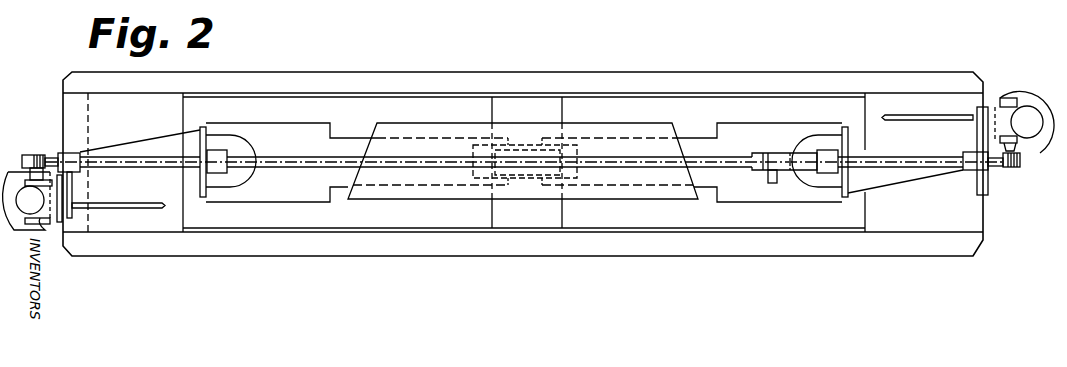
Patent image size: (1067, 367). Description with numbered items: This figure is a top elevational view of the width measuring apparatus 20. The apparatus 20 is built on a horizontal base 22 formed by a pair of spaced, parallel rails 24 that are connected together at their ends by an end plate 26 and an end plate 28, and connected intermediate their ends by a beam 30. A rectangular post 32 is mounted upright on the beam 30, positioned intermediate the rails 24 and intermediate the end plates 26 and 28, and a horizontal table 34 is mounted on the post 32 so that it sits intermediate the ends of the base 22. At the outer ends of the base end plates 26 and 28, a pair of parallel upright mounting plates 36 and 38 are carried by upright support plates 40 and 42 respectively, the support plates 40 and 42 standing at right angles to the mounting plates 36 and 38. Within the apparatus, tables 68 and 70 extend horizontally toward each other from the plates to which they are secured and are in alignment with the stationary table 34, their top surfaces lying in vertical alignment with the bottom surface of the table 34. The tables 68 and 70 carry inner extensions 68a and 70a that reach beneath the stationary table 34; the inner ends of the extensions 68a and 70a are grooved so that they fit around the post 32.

The width measuring apparatus 20 is at (497, 52).
The horizontal base 22 is at (572, 247).
The rails 24 is at (427, 79).
The end plate 26 is at (173, 222).
The end plate 28 is at (920, 227).
The beam 30 is at (543, 107).
The rectangular post 32 is at (532, 163).
The horizontal table 34 is at (625, 130).
The mounting plate 36 is at (72, 180).
The mounting plate 38 is at (980, 107).
The support plate 40 is at (140, 203).
The support plate 42 is at (912, 117).
The table 68 is at (268, 190).
The inner extension 68a is at (357, 148).
The table 70 is at (747, 190).
The inner extension 70a is at (692, 142).